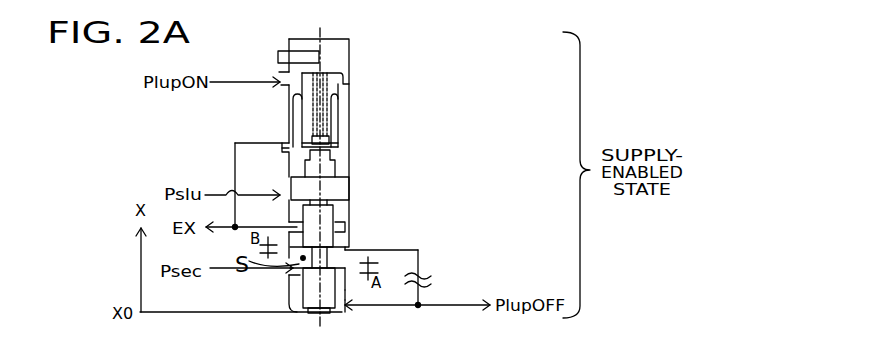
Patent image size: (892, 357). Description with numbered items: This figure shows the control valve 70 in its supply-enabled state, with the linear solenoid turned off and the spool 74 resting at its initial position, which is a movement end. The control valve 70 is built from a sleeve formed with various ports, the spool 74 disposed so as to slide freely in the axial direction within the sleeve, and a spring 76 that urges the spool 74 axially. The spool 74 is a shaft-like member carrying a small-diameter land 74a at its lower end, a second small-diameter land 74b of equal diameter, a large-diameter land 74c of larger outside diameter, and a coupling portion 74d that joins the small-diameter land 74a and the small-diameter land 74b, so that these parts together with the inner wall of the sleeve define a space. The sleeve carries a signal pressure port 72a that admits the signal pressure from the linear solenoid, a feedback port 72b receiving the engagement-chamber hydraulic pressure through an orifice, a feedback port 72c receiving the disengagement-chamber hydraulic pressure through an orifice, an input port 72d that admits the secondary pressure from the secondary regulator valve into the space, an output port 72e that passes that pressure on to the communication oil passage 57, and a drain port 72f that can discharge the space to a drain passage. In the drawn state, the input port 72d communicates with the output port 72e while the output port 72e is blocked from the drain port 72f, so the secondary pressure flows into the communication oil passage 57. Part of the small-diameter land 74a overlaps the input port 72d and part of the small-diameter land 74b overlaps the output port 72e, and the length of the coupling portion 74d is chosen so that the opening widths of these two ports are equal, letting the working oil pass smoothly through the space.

The control valve 70 is at (368, 58).
The signal pressure port 72a is at (282, 193).
The feedback port 72b is at (282, 76).
The feedback port 72c is at (347, 308).
The input port 72d is at (277, 294).
The output port 72e is at (347, 248).
The drain port 72f is at (292, 226).
The spool 74 is at (327, 150).
The small-diameter land 74a is at (322, 274).
The small-diameter land 74b is at (327, 221).
The large-diameter land 74c is at (354, 191).
The coupling portion 74d is at (327, 282).
The spring 76 is at (327, 90).
The communication oil passage 57 is at (419, 253).